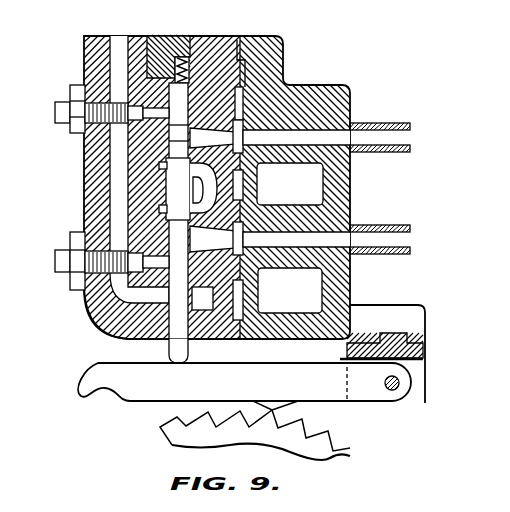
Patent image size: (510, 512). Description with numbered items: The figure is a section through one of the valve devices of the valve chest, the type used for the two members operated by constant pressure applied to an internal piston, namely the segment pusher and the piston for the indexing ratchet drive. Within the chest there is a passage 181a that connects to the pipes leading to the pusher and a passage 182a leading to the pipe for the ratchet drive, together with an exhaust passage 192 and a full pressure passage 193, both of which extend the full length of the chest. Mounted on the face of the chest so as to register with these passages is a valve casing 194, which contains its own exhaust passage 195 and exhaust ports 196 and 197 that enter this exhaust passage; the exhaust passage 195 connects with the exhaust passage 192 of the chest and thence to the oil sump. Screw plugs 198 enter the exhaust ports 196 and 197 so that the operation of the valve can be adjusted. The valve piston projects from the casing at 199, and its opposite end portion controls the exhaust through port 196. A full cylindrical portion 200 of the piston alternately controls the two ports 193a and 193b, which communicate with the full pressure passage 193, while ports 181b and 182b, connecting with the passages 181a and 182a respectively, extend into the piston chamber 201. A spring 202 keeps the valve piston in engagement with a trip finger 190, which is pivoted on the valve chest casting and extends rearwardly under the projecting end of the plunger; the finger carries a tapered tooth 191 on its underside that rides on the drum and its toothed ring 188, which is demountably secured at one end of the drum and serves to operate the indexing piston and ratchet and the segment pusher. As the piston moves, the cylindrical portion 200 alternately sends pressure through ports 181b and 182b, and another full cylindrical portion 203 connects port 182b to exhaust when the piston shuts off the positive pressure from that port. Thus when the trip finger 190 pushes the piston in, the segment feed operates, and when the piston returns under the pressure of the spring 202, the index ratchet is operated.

The valve casing 194 is at (85, 44).
The exhaust passage 195 is at (118, 68).
The exhaust port 196 is at (160, 36).
The exhaust port 197 is at (110, 318).
The screw plug 198 is at (55, 112).
The projecting end of valve piston 199 is at (168, 350).
The full cylindrical portion 200 is at (175, 190).
The piston chamber 201 is at (165, 141).
The spring 202 is at (197, 36).
The full cylindrical portion 203 is at (178, 100).
The full pressure passage 193 is at (290, 184).
The port 193a is at (163, 207).
The port 193b is at (163, 160).
The exhaust passage 192 is at (290, 290).
The passage 181a is at (354, 230).
The port 181b is at (270, 258).
The passage 182a is at (354, 127).
The port 182b is at (228, 128).
The trip finger 190 is at (132, 379).
The tapered tooth 191 is at (278, 407).
The toothed ring 188 is at (172, 445).